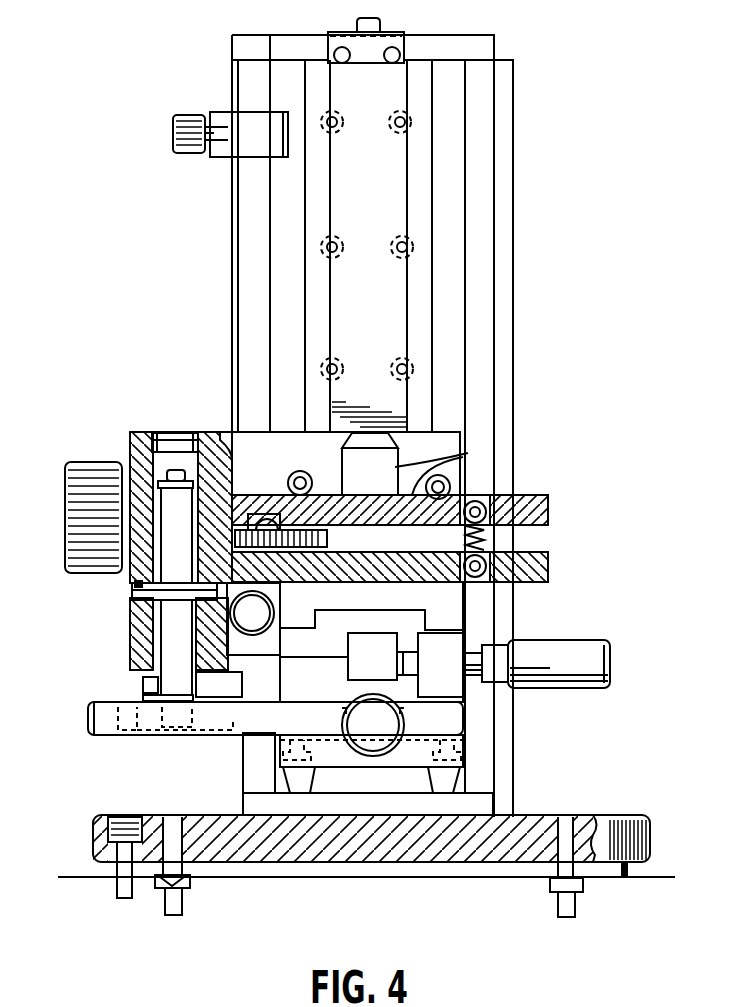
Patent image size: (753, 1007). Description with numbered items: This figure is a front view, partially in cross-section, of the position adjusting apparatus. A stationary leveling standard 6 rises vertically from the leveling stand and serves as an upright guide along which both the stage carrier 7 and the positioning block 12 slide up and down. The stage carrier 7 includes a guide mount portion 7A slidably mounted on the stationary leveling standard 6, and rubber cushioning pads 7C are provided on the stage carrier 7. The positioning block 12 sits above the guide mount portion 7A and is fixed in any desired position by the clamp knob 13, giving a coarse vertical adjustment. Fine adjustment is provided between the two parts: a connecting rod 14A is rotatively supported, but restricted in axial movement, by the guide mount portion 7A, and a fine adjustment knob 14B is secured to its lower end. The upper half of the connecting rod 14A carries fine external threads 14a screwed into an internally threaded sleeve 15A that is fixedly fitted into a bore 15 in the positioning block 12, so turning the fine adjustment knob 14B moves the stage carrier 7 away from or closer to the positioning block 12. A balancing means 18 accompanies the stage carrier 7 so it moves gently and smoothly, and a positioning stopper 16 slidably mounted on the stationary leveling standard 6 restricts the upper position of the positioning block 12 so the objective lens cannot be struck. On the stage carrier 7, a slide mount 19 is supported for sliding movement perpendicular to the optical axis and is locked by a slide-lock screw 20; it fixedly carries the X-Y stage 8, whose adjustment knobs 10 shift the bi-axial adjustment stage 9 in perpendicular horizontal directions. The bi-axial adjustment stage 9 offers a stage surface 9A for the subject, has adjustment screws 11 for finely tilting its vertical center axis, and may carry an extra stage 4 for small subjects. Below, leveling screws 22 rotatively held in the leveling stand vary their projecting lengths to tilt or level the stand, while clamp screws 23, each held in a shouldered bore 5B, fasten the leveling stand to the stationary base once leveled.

The extra stage 4 is at (440, 450).
The shouldered bore 5B is at (133, 848).
The stationary leveling standard 6 is at (515, 348).
The stage carrier 7 is at (410, 770).
The guide mount portion 7A is at (138, 630).
The cushioning pads 7C is at (300, 790).
The X-Y stage 8 is at (478, 622).
The bi-axial adjustment stage 9 is at (560, 560).
The stage surface 9A is at (468, 458).
The adjustment knobs 10 is at (588, 650).
The adjustment screws 11 is at (283, 530).
The positioning block 12 is at (292, 440).
The clamp knob 13 is at (92, 460).
The fine external threads 14a is at (142, 432).
The connecting rod 14A is at (173, 648).
The fine adjustment knob 14B is at (125, 738).
The bore 15 is at (195, 442).
The sleeve 15A is at (133, 587).
The positioning stopper 16 is at (242, 120).
The balancing means 18 is at (392, 208).
The slide mount 19 is at (102, 717).
The slide-lock screw 20 is at (372, 757).
The leveling screws 22 is at (173, 832).
The clamp screws 23 is at (110, 873).